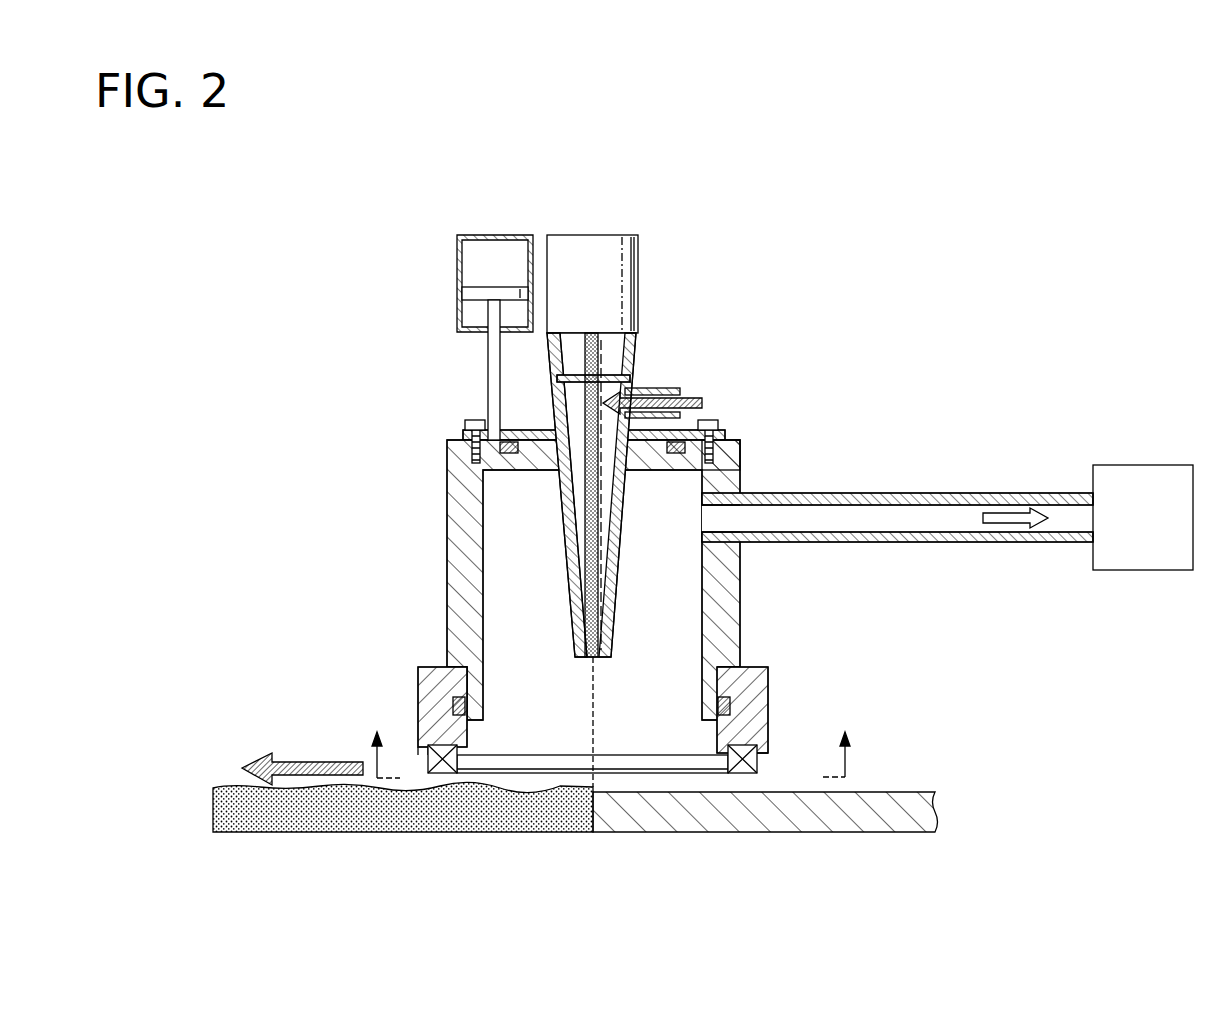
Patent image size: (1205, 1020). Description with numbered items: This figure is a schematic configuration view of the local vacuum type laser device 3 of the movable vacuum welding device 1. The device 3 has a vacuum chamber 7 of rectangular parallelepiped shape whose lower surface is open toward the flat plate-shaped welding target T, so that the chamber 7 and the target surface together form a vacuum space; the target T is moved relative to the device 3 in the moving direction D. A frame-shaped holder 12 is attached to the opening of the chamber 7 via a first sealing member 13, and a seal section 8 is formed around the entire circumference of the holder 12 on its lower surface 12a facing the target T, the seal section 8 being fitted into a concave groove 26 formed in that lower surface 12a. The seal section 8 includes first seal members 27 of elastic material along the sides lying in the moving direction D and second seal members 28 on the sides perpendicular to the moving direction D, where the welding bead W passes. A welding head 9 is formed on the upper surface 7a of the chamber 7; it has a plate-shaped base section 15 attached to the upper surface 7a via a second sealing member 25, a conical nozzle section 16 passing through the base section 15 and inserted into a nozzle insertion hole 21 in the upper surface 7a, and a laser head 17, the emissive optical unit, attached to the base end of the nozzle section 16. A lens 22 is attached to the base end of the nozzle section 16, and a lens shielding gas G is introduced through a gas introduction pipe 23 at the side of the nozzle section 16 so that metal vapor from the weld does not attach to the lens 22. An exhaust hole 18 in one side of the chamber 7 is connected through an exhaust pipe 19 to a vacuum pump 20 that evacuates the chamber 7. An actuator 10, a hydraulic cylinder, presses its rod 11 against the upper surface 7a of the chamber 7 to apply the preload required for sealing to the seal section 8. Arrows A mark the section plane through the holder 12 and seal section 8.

The movable vacuum welding device 1 is at (377, 198).
The local vacuum type laser device 3 is at (768, 308).
The vacuum chamber 7 is at (460, 516).
The upper surface 7a is at (730, 440).
The seal section 8 is at (781, 758).
The welding head 9 is at (657, 250).
The actuator 10 is at (493, 255).
The rod 11 is at (490, 357).
The holder 12 is at (428, 696).
The lower surface 12a is at (738, 757).
The first sealing member 13 is at (725, 706).
The base section 15 is at (723, 433).
The nozzle section 16 is at (630, 357).
The laser head 17 is at (615, 288).
The exhaust hole 18 is at (733, 510).
The exhaust pipe 19 is at (828, 497).
The vacuum pump 20 is at (1138, 478).
The nozzle insertion hole 21 is at (573, 452).
The lens 22 is at (577, 376).
The gas introduction pipe 23 is at (650, 390).
The second sealing member 25 is at (490, 453).
The concave groove 26 is at (430, 768).
The first seal member 27 is at (647, 762).
The second seal member 28 is at (758, 764).
The lens shielding gas G is at (690, 400).
The moving direction D is at (300, 764).
The welding bead W is at (222, 787).
The welding target T is at (895, 800).
The section line A is at (612, 755).